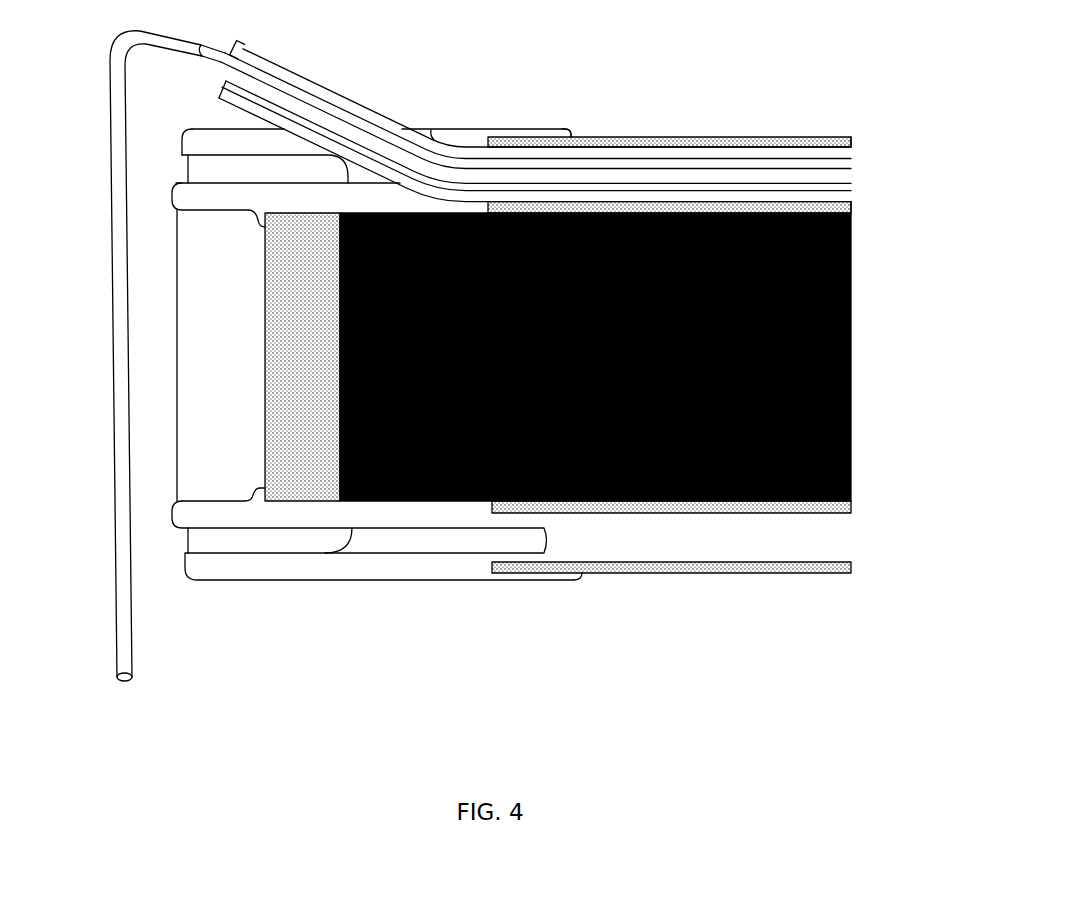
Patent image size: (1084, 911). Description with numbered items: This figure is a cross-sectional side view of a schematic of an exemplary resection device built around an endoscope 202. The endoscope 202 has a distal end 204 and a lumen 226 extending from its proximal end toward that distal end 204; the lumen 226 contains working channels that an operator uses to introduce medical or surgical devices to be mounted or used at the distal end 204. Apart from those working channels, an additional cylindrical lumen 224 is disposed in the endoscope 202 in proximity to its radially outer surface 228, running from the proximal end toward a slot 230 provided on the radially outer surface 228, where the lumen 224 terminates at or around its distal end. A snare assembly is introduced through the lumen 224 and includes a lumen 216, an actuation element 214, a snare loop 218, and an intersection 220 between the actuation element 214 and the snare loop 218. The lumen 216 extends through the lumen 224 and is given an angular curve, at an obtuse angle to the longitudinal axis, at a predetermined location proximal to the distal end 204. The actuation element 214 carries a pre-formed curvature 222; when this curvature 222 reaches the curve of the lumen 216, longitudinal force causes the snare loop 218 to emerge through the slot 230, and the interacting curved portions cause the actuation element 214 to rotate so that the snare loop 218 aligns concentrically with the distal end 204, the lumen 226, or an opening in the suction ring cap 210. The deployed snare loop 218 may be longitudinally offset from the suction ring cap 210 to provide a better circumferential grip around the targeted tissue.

The endoscope 202 is at (770, 584).
The distal end 204 is at (588, 584).
The suction ring cap 210 is at (365, 582).
The actuation element 214 is at (291, 88).
The lumen 216 is at (352, 101).
The snare loop 218 is at (107, 197).
The intersection 220 is at (252, 46).
The curvature 222 is at (468, 139).
The lumen 224 is at (568, 133).
The lumen 226 is at (879, 297).
The radially outer surface 228 is at (725, 137).
The slot 230 is at (404, 126).